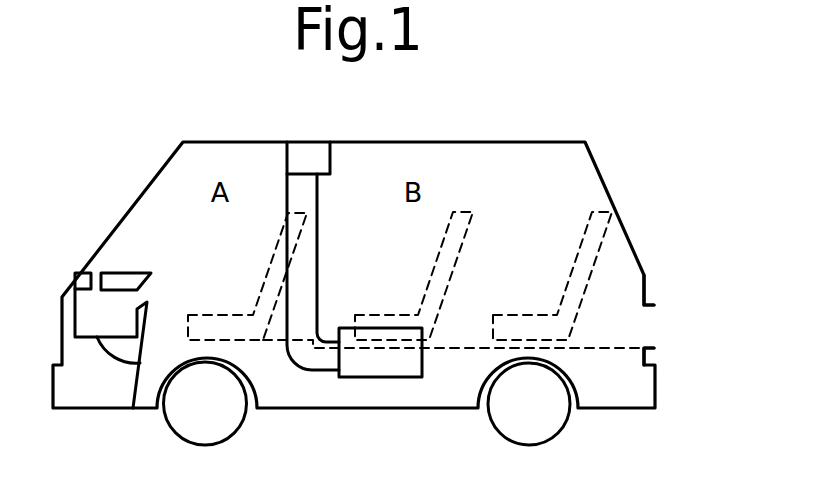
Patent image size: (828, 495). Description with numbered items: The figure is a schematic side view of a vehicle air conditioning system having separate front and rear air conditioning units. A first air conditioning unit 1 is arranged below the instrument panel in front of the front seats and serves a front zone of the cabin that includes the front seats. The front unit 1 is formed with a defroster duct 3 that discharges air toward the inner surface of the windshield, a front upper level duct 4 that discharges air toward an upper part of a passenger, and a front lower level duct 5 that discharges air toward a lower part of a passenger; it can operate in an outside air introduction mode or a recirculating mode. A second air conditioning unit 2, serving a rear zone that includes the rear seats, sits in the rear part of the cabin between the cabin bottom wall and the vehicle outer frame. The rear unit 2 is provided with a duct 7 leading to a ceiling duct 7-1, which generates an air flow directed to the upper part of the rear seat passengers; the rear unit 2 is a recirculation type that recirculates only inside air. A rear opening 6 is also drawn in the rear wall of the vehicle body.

The first air conditioning unit 1 is at (88, 320).
The second air conditioning unit 2 is at (378, 367).
The defroster duct 3 is at (82, 282).
The front upper level duct 4 is at (143, 289).
The front lower level duct 5 is at (108, 365).
The rear exhaust opening 6 is at (632, 332).
The duct 7 is at (317, 250).
The ceiling duct 7-1 is at (310, 153).